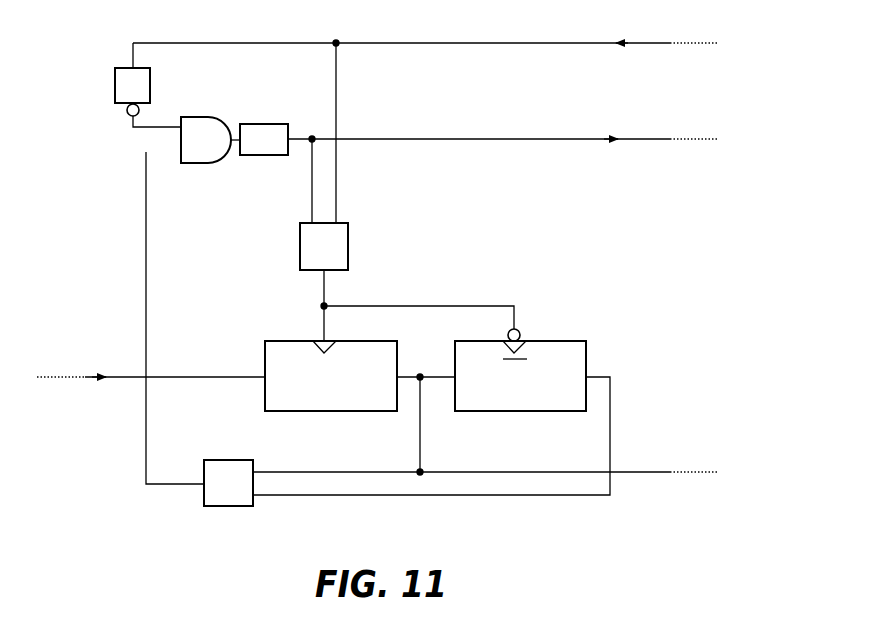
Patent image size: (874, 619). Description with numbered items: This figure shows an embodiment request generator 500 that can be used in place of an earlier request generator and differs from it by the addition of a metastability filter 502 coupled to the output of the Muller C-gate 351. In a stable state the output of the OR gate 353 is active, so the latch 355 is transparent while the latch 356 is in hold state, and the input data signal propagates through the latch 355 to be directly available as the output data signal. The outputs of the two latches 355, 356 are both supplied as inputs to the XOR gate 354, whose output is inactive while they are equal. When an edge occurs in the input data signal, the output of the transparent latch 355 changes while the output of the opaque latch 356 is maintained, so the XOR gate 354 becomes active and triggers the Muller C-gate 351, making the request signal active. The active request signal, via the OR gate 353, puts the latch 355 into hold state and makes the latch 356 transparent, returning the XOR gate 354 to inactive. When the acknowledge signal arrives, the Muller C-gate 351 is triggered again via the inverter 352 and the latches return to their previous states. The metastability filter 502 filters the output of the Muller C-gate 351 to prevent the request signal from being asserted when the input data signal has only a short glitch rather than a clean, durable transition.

The request generator 500 is at (717, 578).
The inverter 352 is at (77, 92).
The Muller C-gate 351 is at (252, 130).
The metastability filter 502 is at (272, 155).
The OR gate 353 is at (380, 246).
The latch 355 is at (331, 388).
The latch 356 is at (520, 382).
The XOR gate 354 is at (267, 495).